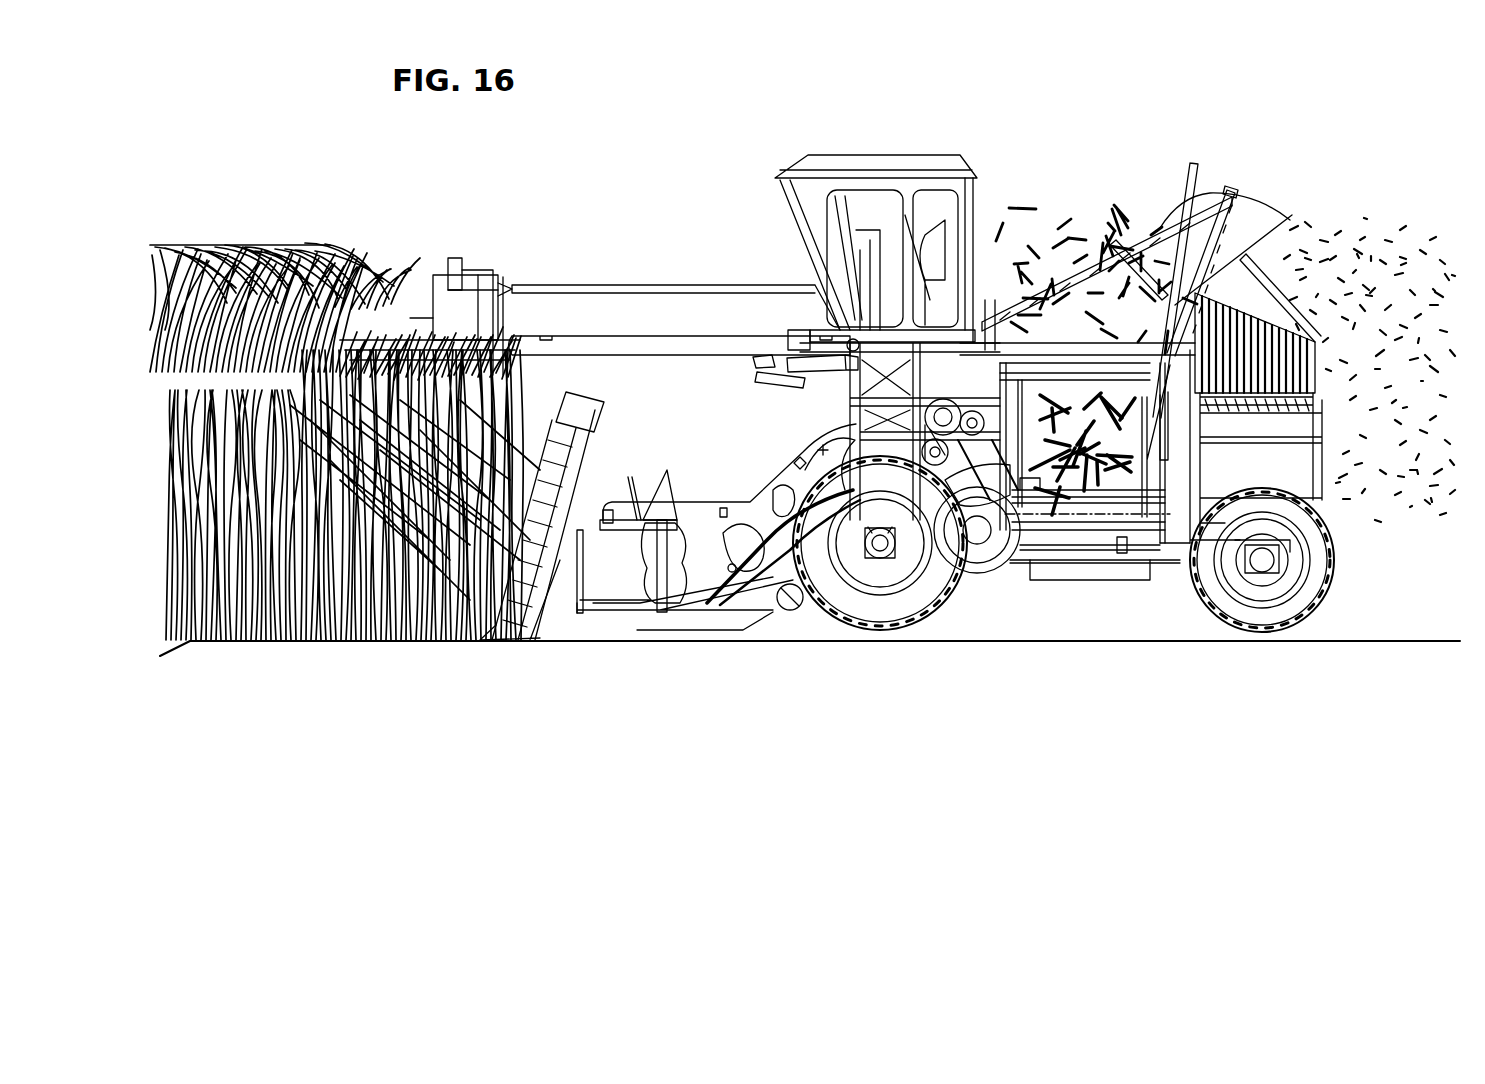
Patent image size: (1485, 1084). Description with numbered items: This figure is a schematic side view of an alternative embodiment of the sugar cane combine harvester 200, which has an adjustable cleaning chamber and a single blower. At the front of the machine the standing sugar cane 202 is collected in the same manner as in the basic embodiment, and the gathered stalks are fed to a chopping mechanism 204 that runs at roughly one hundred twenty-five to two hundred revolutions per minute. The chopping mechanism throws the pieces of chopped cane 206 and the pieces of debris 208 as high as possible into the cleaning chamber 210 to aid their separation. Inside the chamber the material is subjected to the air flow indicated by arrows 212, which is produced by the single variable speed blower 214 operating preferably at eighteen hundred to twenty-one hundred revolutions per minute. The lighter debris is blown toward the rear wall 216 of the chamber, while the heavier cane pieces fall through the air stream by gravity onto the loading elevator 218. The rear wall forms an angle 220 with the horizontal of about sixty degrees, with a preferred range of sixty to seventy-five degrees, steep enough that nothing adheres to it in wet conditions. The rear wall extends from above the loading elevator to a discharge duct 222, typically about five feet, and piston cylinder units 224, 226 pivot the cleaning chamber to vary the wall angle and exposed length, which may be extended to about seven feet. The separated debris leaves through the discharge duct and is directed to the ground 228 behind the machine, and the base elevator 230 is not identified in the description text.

The sugar cane combine harvester 200 is at (1090, 136).
The sugar cane 202 is at (198, 412).
The chopping mechanism 204 is at (835, 400).
The pieces of chopped cane 206 is at (1100, 268).
The pieces of debris 208 is at (1063, 250).
The cleaning chamber 210 is at (1165, 230).
The arrows 212 is at (1030, 413).
The single variable speed blower 214 is at (1087, 517).
The rear wall 216 is at (1198, 283).
The loading elevator 218 is at (1112, 507).
The angle 220 is at (1160, 395).
The discharge duct 222 is at (1242, 212).
The piston cylinder unit 224 is at (1310, 372).
The piston cylinder unit 226 is at (1290, 303).
The ground 228 is at (1388, 632).
The base elevator 230 is at (542, 516).